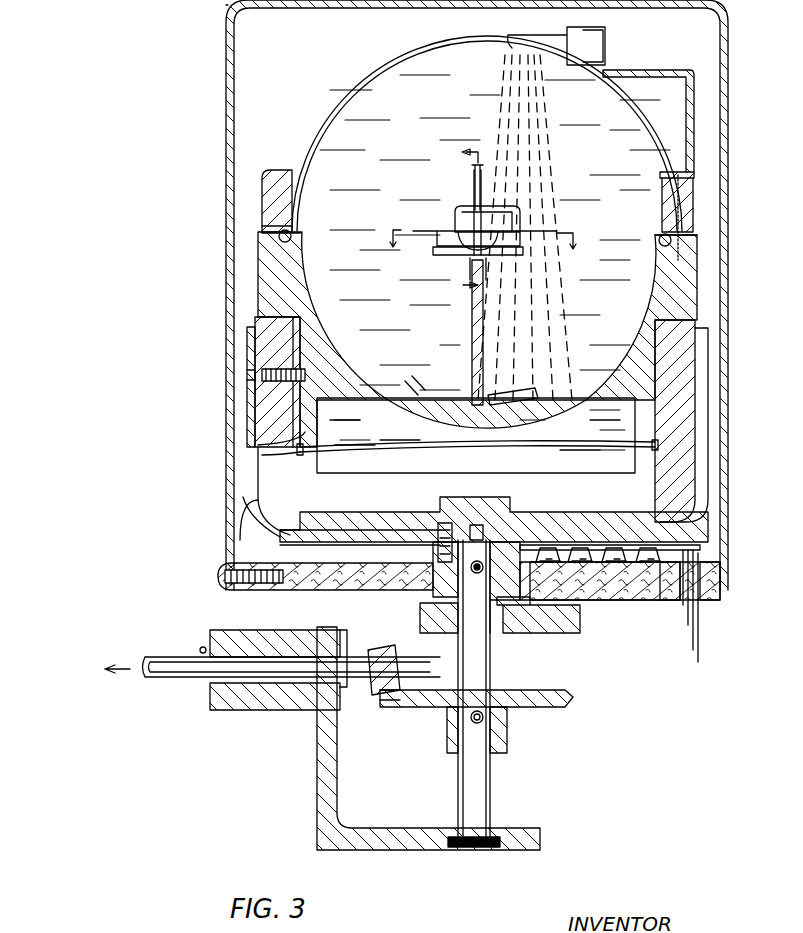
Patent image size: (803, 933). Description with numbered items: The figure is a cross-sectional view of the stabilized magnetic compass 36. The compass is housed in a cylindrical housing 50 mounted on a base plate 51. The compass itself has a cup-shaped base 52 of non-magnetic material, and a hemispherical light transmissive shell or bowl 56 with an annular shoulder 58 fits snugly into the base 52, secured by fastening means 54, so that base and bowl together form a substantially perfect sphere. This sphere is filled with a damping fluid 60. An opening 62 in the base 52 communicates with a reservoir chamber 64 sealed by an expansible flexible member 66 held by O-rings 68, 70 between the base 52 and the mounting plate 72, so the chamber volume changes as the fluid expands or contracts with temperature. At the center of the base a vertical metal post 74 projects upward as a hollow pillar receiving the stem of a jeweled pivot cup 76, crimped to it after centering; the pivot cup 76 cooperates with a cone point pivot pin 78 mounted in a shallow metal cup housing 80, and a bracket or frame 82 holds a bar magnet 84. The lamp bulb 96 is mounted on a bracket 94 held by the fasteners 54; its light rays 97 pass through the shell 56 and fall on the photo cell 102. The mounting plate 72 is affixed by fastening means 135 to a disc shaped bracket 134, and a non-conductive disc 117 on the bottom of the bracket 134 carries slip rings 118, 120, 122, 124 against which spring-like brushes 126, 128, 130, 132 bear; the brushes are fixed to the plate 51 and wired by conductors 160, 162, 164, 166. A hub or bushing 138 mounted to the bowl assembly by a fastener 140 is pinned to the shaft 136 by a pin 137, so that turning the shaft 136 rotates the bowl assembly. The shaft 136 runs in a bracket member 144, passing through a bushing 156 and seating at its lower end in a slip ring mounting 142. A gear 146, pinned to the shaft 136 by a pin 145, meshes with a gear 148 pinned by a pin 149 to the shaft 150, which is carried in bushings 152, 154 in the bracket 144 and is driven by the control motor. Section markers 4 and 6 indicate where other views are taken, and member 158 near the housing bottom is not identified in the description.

The magnetic compass 36 is at (190, 188).
The cylindrical housing 50 is at (228, 386).
The base plate 51 is at (707, 595).
The cup-shaped base 52 is at (262, 300).
The fastening means 54 is at (690, 195).
The hemispherical light transmissive shell 56 is at (378, 74).
The annular shoulder 58 is at (282, 238).
The damping fluid 60 is at (372, 228).
The opening 62 is at (415, 381).
The reservoir chamber 64 is at (350, 428).
The expansible flexible member 66 is at (365, 455).
The O-ring 68 is at (300, 433).
The O-ring 70 is at (290, 455).
The mounting plate 72 is at (290, 475).
The vertical metal post 74 is at (471, 380).
The jeweled pivot cup 76 is at (484, 266).
The cone point pivot pin 78 is at (468, 208).
The cup housing 80 is at (456, 222).
The bracket or frame 82 is at (438, 243).
The bar magnet 84 is at (437, 255).
The bracket 94 is at (686, 130).
The lamp bulb 96 is at (553, 42).
The light rays 97 is at (540, 153).
The photo cell 102 is at (525, 395).
The disc 117 is at (677, 540).
The slip ring 118 is at (280, 538).
The slip ring 120 is at (614, 566).
The slip ring 122 is at (635, 543).
The slip ring 124 is at (667, 551).
The brush 126 is at (664, 582).
The brush 128 is at (648, 568).
The brush 130 is at (582, 566).
The brush 132 is at (550, 566).
The disc shaped bracket 134 is at (246, 512).
The fastening means 135 is at (248, 362).
The shaft 136 is at (493, 780).
The pin 137 is at (477, 575).
The hub or bushing 138 is at (455, 603).
The fastener 140 is at (442, 603).
The slip ring mounting 142 is at (490, 850).
The bracket member 144 is at (312, 744).
The pin 145 is at (476, 724).
The gear 146 is at (510, 730).
The gear 148 is at (373, 697).
The pin 149 is at (388, 702).
The shaft 150 is at (200, 670).
The bushing 152 is at (200, 648).
The bushing 154 is at (320, 702).
The bushing 156 is at (500, 633).
The insulation 158 is at (332, 590).
The conductor 160 is at (698, 662).
The conductor 162 is at (695, 650).
The conductor 164 is at (692, 625).
The conductor 166 is at (688, 605).
The section line 4 is at (463, 219).
The section line 6 is at (484, 247).